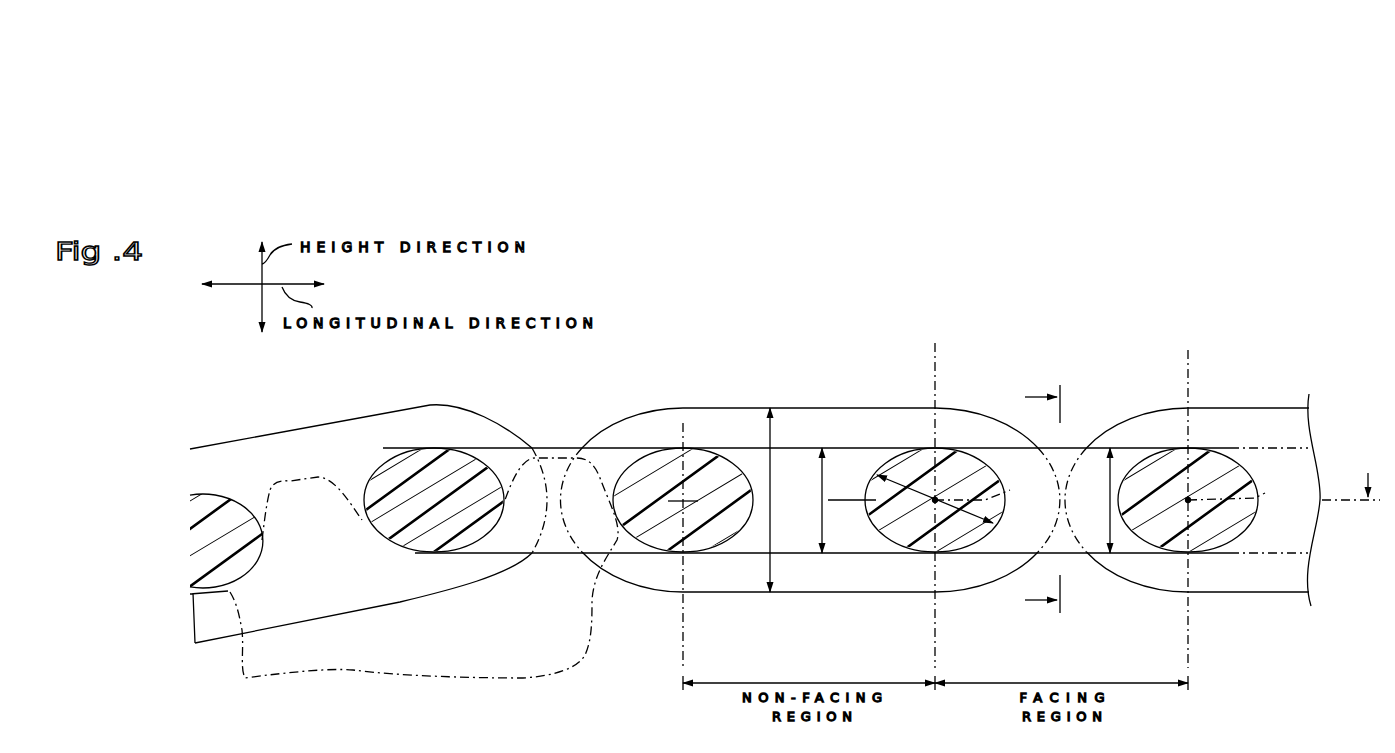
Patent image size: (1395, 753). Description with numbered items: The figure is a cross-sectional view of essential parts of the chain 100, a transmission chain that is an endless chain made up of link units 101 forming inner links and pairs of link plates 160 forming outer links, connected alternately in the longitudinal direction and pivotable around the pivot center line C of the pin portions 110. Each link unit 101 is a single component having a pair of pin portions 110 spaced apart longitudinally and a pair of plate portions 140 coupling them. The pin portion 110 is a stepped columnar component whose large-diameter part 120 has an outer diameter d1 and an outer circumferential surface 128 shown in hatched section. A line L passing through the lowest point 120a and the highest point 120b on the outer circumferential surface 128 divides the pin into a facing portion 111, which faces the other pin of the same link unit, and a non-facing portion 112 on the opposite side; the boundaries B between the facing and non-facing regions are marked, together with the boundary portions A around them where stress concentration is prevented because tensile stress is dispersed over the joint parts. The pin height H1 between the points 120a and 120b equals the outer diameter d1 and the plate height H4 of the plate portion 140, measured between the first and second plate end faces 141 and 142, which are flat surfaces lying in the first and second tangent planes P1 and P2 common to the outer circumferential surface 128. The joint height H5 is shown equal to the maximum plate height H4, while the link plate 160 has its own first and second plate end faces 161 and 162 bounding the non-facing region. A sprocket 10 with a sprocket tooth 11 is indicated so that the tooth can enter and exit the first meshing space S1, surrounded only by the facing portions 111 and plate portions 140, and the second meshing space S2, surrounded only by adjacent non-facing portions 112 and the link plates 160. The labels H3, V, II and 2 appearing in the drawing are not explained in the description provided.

The chain 100 is at (847, 303).
The sprocket 10 is at (339, 476).
The sprocket tooth 11 is at (289, 478).
The pin portion 110 is at (214, 491).
The large-diameter part 120 is at (640, 462).
The lowest point 120a is at (930, 553).
The highest point 120b is at (933, 446).
The non-facing portion 112 is at (733, 458).
The facing portion 111 is at (1012, 452).
The outer circumferential surface 128 is at (990, 545).
The link plate 160 is at (363, 614).
The first plate end face 161 is at (740, 593).
The second plate end face 162 is at (746, 408).
The plate portion 140 is at (1094, 437).
The first plate end face 141 is at (1113, 554).
The second plate end face 142 is at (1080, 441).
The link unit 101 is at (1085, 569).
The offset 2 is at (840, 498).
The boundary portion A is at (683, 430).
The boundary B is at (683, 661).
The pivot center line C is at (1149, 487).
The outer diameter d1 is at (980, 515).
The pin height H1 is at (807, 500).
The height H3 is at (1089, 500).
The plate height H4 is at (1083, 513).
The joint height H5 is at (784, 500).
The line L is at (935, 343).
The first tangent plane P1 is at (1270, 592).
The second tangent plane P2 is at (1272, 446).
The first meshing space S1 is at (548, 498).
The second meshing space S2 is at (424, 568).
The view direction V is at (1034, 499).
The section II is at (1351, 478).